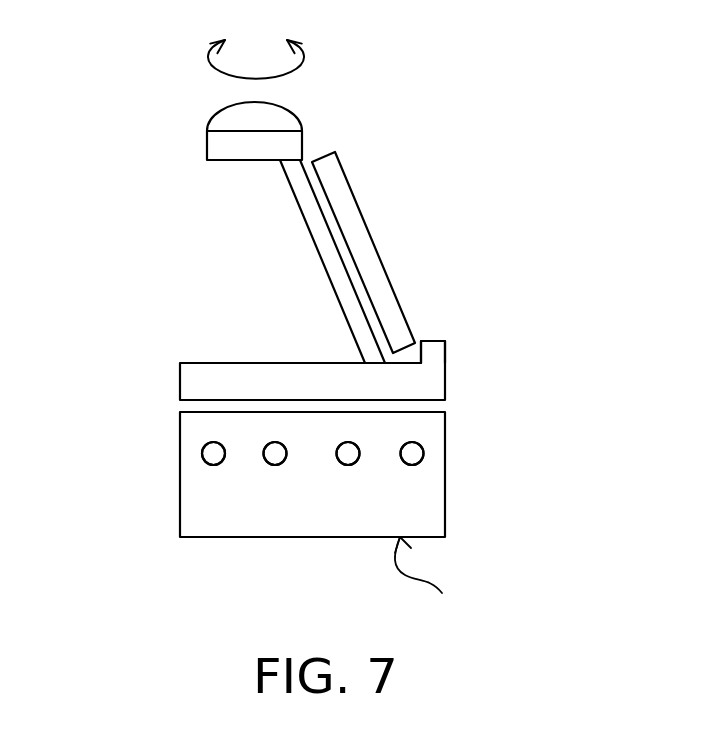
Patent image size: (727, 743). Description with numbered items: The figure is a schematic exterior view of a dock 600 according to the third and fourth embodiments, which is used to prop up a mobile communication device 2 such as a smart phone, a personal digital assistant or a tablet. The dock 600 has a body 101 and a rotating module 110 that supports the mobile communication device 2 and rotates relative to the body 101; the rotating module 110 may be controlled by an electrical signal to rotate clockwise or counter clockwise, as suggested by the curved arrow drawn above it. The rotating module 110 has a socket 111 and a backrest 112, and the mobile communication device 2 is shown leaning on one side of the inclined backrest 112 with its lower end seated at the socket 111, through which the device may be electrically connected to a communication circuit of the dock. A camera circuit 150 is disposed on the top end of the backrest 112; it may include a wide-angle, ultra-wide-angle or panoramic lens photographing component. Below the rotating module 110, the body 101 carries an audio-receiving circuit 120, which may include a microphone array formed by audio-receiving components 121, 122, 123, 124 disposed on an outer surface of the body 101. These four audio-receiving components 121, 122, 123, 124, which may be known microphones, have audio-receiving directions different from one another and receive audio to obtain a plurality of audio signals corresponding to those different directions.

The mobile communication device 2 is at (358, 205).
The body 101 is at (180, 425).
The rotating module 110 is at (180, 375).
The socket 111 is at (412, 363).
The backrest 112 is at (323, 263).
The audio-receiving circuit 120 is at (105, 443).
The audio-receiving component 121 is at (423, 453).
The audio-receiving component 122 is at (348, 454).
The audio-receiving component 123 is at (275, 454).
The audio-receiving component 124 is at (213, 454).
The camera circuit 150 is at (207, 143).
The dock 600 is at (427, 584).